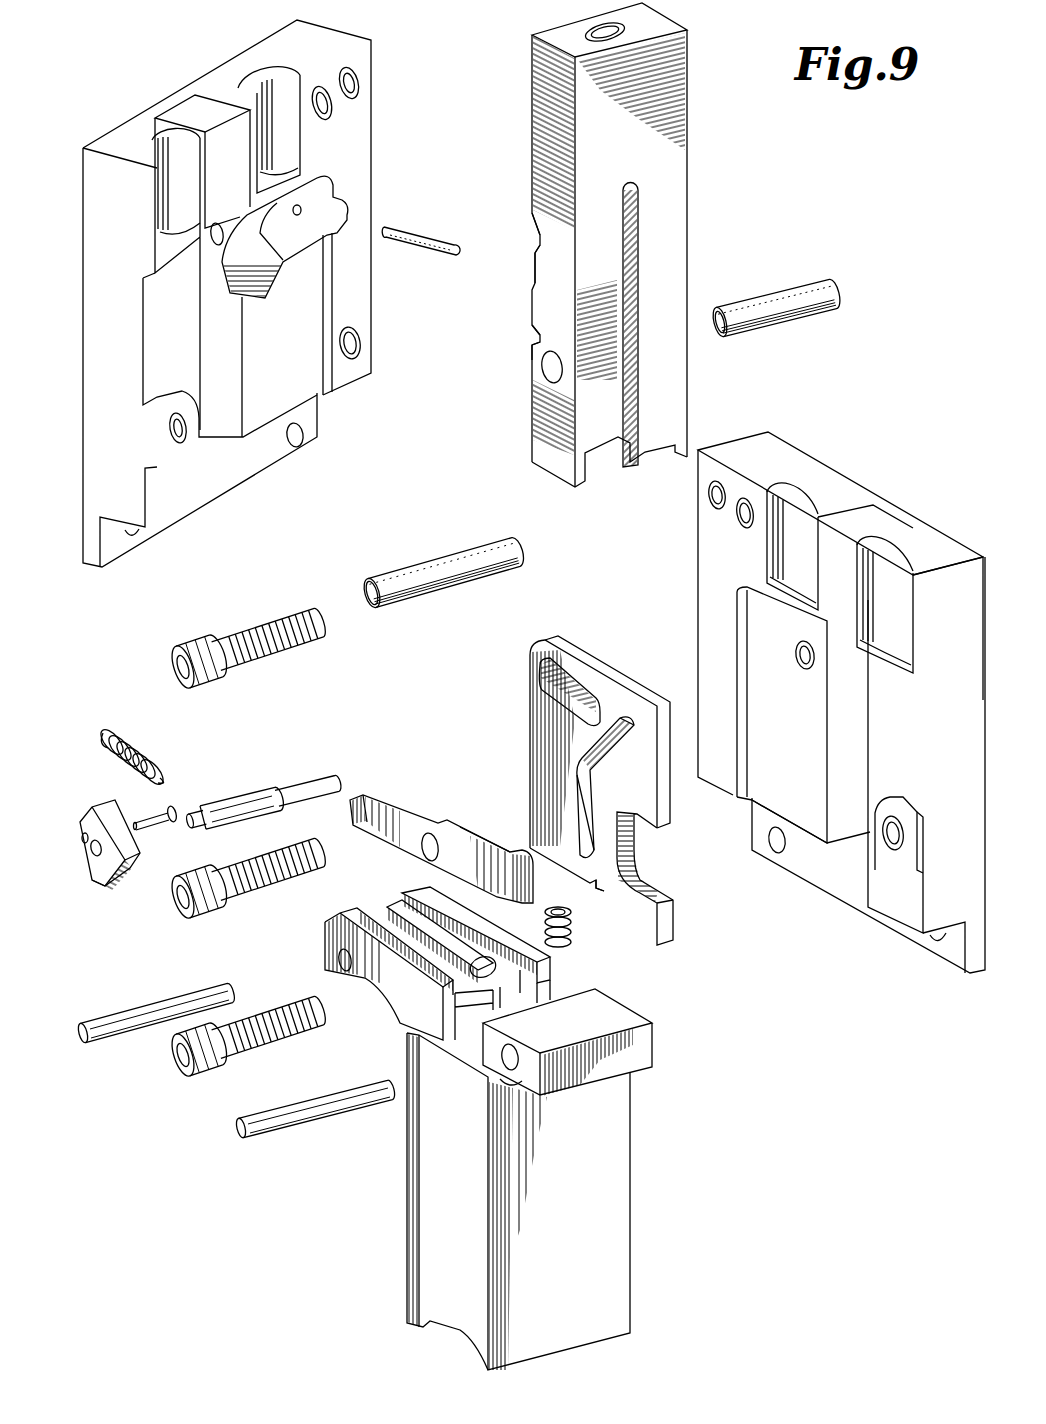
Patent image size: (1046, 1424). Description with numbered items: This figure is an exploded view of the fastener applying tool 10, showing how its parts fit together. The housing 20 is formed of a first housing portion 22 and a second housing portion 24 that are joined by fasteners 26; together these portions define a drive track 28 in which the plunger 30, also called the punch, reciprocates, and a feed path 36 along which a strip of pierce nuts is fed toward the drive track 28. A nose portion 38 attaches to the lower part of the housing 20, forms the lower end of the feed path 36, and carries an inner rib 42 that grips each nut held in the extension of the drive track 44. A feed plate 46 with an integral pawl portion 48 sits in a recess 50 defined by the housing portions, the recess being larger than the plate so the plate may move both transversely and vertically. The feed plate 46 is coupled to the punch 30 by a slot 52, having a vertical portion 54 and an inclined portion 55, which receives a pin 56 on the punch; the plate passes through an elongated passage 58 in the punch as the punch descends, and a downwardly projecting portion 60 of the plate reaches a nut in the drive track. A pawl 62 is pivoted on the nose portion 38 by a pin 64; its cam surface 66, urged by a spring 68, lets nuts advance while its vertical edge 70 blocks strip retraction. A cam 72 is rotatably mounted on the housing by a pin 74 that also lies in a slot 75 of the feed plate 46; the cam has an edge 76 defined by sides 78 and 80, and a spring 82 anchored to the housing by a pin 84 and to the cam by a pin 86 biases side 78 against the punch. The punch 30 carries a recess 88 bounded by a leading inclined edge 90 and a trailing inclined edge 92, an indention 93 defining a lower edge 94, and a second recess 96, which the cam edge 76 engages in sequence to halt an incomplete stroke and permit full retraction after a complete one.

The tool 10 is at (892, 154).
The housing 20 is at (816, 453).
The first housing portion 22 is at (931, 525).
The second housing portion 24 is at (229, 56).
The fasteners 26 is at (222, 643).
The drive track 28 is at (214, 115).
The plunger 30 is at (688, 172).
The feed path 36 is at (371, 898).
The nose portion 38 is at (633, 1252).
The rib 42 is at (445, 992).
The extension of the drive track 44 is at (567, 996).
The feed plate 46 is at (608, 664).
The pawl portion 48 is at (602, 892).
The recess 50 is at (326, 295).
The slot 52 is at (580, 757).
The vertical portion 54 is at (585, 784).
The inclined portion 55 is at (633, 727).
The pin 56 is at (780, 293).
The elongated passage 58 is at (633, 258).
The downwardly projecting portion 60 is at (667, 936).
The pawl 62 is at (388, 797).
The pin 64 is at (136, 1040).
The cam surface 66 is at (503, 863).
The spring 68 is at (547, 922).
The vertical edge 70 is at (527, 869).
The cam 72 is at (80, 883).
The pin 74 is at (247, 793).
The slot 75 is at (547, 673).
The edge 76 is at (132, 862).
The side 78 is at (107, 897).
The side 80 is at (128, 843).
The spring 82 is at (138, 745).
The pin 84 is at (415, 231).
The pin 86 is at (157, 808).
The recess 88 is at (538, 343).
The leading inclined edge 90 is at (538, 347).
The trailing inclined edge 92 is at (537, 335).
The indention 93 is at (537, 248).
The lower edge 94 is at (535, 276).
The second recess 96 is at (538, 240).